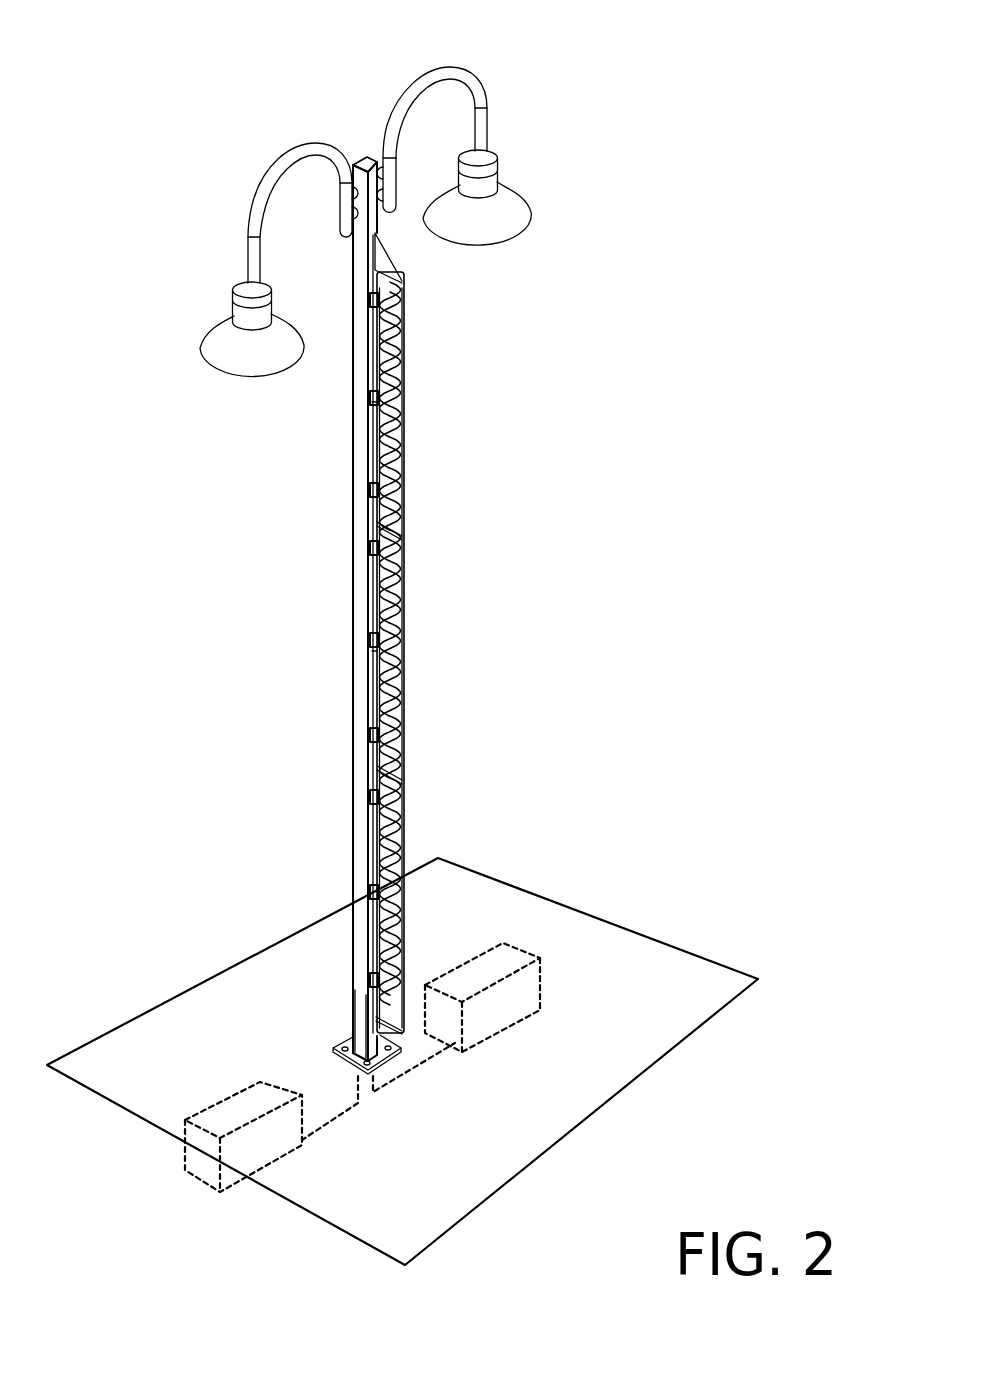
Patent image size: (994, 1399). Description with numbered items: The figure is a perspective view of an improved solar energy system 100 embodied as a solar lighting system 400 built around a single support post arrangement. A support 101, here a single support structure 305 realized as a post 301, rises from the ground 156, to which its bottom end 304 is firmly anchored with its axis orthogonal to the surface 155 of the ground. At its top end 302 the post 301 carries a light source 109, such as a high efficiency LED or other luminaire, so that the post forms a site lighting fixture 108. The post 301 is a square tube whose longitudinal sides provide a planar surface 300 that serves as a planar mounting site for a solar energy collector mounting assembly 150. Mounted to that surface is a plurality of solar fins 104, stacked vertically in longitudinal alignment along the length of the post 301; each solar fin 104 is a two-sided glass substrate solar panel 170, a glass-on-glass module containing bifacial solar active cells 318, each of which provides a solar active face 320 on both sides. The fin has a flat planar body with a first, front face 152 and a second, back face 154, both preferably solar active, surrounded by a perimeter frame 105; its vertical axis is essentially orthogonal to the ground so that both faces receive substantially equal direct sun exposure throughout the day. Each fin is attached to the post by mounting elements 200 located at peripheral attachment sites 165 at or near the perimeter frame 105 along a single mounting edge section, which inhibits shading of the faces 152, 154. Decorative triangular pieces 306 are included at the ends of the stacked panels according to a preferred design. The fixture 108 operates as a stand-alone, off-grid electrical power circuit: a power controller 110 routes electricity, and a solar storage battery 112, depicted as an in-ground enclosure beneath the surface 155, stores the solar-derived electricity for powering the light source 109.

The solar energy system 100 is at (625, 145).
The support 101 is at (354, 570).
The solar fin 104 is at (466, 634).
The perimeter frame 105 is at (369, 622).
The site lighting fixture 108 is at (487, 85).
The light source 109 is at (198, 350).
The power controller 110 is at (300, 1150).
The solar storage battery 112 is at (543, 1012).
The solar energy collector mounting assembly 150 is at (638, 195).
The first face 152 is at (406, 627).
The second face 154 is at (406, 560).
The surface 155 is at (599, 909).
The ground 156 is at (418, 1237).
The peripheral attachment site 165 is at (371, 407).
The solar panel 170 is at (406, 378).
The mounting element 200 is at (370, 300).
The planar surface 300 is at (356, 597).
The post 301 is at (287, 1024).
The top end 302 is at (365, 160).
The bottom end 304 is at (333, 1050).
The single support structure 305 is at (359, 1013).
The triangular pieces 306 is at (406, 278).
The solar active cell 318 is at (406, 300).
The solar active face 320 is at (406, 491).
The solar lighting system 400 is at (648, 238).